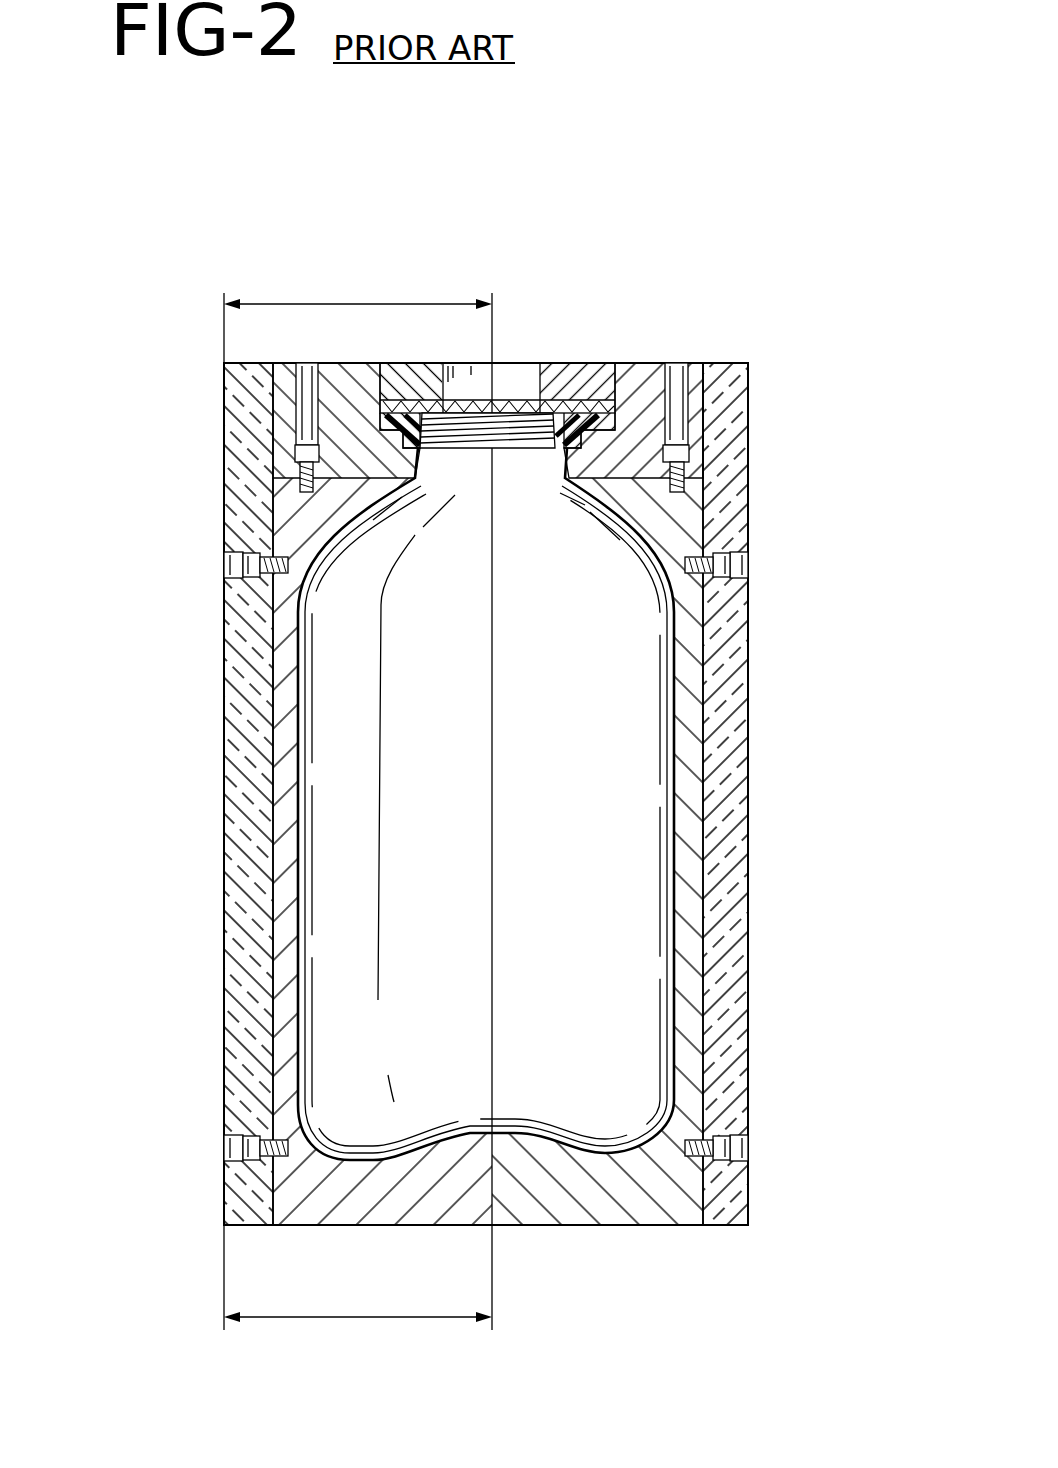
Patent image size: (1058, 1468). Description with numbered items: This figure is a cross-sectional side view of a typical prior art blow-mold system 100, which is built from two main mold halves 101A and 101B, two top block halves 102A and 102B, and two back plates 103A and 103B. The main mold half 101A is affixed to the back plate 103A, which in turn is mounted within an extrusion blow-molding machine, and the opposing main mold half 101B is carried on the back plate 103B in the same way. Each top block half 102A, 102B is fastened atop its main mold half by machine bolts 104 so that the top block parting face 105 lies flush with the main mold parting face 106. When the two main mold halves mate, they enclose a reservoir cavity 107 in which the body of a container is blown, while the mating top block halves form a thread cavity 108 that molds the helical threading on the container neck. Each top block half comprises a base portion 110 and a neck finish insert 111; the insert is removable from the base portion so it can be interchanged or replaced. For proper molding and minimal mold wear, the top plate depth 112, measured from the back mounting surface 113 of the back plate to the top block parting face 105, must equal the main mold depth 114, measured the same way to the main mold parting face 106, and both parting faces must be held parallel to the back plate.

The mold system 100 is at (680, 214).
The main mold half 101A is at (420, 1226).
The main mold half 101B is at (592, 1227).
The top block half 102A is at (330, 363).
The top block half 102B is at (617, 363).
The back plate 103A is at (224, 890).
The back plate 103B is at (750, 905).
The machine bolts 104 is at (297, 452).
The top block parting face 105 is at (495, 385).
The main mold parting face 106 is at (490, 541).
The reservoir cavity 107 is at (320, 818).
The thread cavity 108 is at (517, 445).
The base portion 110 is at (705, 378).
The neck finish insert 111 is at (612, 418).
The top plate depth 112 is at (368, 304).
The back mounting surface 113 is at (224, 1009).
The main mold depth 114 is at (345, 1317).